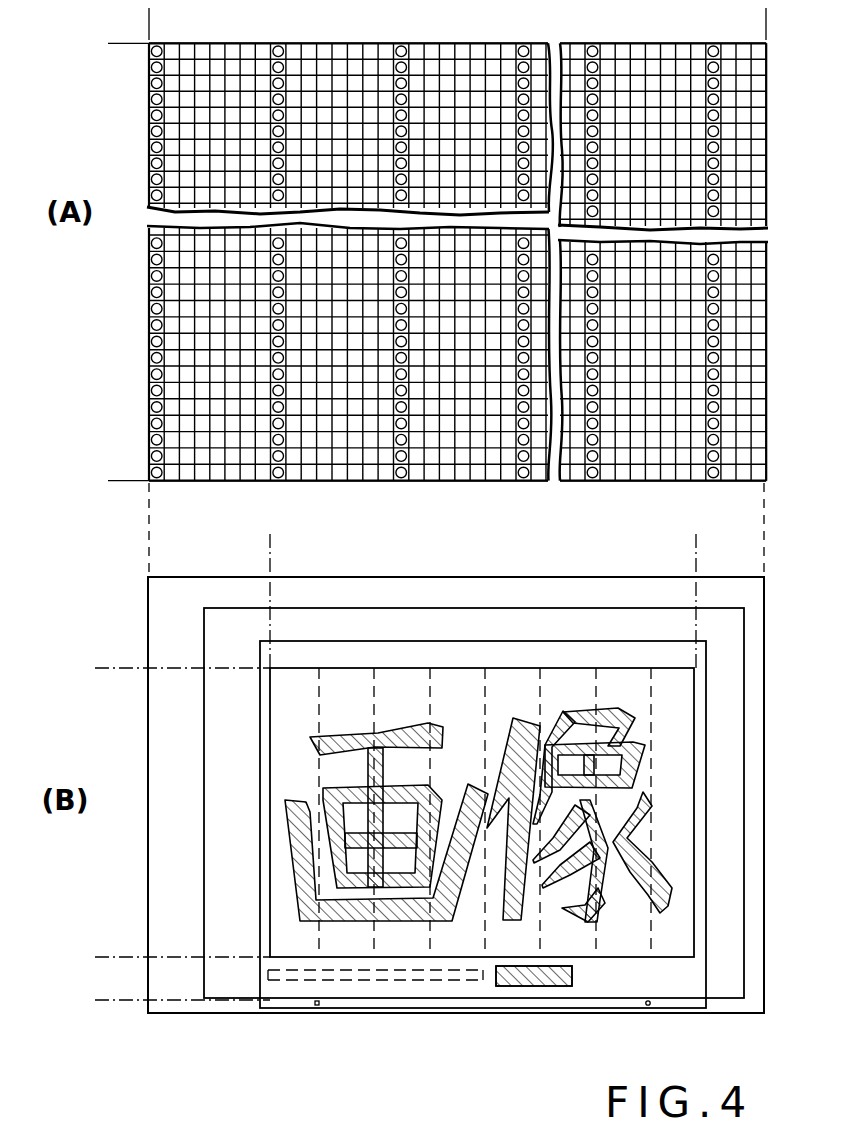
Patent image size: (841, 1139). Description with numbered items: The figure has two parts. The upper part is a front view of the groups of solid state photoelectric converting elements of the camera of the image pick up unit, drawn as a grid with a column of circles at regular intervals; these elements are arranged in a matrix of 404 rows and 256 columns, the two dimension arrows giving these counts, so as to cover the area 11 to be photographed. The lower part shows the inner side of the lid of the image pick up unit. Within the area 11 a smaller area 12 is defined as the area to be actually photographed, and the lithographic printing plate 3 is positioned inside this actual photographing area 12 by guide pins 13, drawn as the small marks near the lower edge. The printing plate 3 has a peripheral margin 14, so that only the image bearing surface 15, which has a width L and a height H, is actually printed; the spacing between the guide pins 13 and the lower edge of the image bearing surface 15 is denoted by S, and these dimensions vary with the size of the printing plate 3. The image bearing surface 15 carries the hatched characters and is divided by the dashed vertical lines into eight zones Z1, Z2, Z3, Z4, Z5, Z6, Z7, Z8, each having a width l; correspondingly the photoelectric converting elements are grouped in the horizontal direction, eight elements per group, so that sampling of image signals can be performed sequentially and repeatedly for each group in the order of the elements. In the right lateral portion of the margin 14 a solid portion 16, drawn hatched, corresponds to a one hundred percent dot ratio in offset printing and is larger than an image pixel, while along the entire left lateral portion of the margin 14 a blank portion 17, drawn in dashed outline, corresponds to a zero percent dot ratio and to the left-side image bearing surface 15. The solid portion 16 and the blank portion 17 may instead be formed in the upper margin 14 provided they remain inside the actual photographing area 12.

The rows of the photoelectric converting element matrix 404 is at (766, 18).
The columns of the photoelectric converting element matrix 256 is at (118, 43).
The lithographic printing plate 3 is at (485, 1007).
The area to be photographed 11 is at (646, 1006).
The area to be actually photographed 12 is at (571, 997).
The guide pins 13 is at (319, 1006).
The margin 14 is at (523, 992).
The image bearing surface 15 is at (398, 950).
The solid portion 16 is at (548, 988).
The blank portion 17 is at (297, 983).
The zone Z1 is at (294, 680).
The zone Z2 is at (344, 680).
The zone Z3 is at (392, 680).
The zone Z4 is at (450, 680).
The zone Z5 is at (507, 680).
The zone Z6 is at (560, 680).
The zone Z7 is at (610, 680).
The zone Z8 is at (665, 680).
The width of the image bearing surface L is at (270, 543).
The height of the image bearing surface H is at (103, 957).
The spacing S is at (103, 957).
The zone width l is at (651, 690).